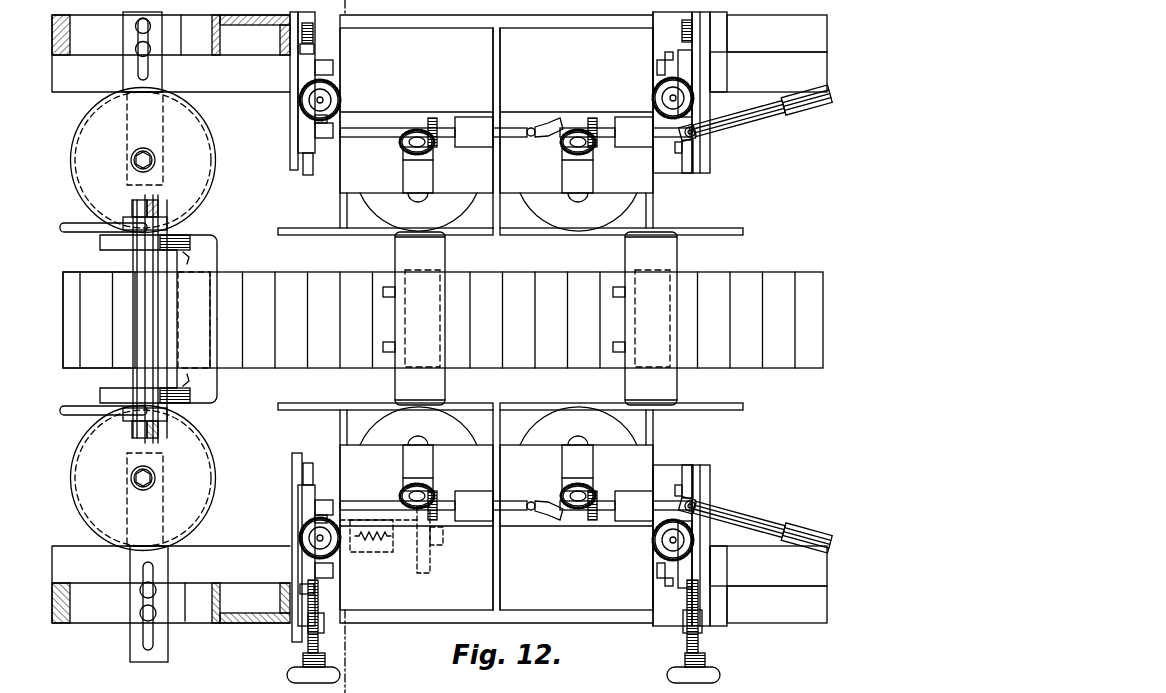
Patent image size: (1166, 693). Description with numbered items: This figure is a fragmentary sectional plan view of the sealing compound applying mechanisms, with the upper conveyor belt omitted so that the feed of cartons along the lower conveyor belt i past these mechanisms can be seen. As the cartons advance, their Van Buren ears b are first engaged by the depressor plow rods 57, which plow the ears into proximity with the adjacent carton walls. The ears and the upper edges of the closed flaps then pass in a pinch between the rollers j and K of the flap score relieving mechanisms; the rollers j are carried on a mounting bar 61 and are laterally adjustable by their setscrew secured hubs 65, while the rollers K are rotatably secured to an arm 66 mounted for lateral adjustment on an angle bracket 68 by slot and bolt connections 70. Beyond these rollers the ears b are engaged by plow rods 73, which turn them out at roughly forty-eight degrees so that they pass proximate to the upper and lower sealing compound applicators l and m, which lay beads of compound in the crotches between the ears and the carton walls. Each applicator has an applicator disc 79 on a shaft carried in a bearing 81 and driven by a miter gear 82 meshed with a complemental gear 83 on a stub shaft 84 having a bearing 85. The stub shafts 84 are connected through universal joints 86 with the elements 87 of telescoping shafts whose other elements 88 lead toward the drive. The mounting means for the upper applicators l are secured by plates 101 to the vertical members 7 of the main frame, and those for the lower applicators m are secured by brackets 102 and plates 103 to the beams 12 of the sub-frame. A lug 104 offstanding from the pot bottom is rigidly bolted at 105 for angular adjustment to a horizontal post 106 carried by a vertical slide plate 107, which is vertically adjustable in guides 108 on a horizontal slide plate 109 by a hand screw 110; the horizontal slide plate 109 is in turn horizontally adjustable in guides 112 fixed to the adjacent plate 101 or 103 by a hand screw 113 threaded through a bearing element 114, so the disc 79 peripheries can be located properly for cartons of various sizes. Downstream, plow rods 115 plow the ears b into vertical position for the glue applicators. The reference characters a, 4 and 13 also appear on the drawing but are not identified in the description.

The frame bar 4 is at (778, 57).
The vertical members 7 is at (224, 57).
The sub-frame beams 12 is at (802, 55).
The pusher unit 13 is at (347, 41).
The depressor plow rods 57 is at (68, 232).
The mounting bar 61 is at (133, 318).
The setscrew secured hubs 65 is at (160, 216).
The upper arm 66 is at (162, 78).
The upper angle bracket 68 is at (178, 40).
The slot and bolt connections 70 is at (135, 49).
The upper plow rods 73 is at (330, 226).
The applicator disc 79 is at (384, 202).
The bearing 81 is at (433, 173).
The driven miter gear 82 is at (410, 136).
The complemental gear 83 is at (432, 118).
The stub shaft 84 is at (512, 128).
The bearing 85 is at (475, 120).
The universal joints 86 is at (529, 140).
The telescoping shaft element 87 is at (756, 131).
The telescoping shaft element 88 is at (794, 113).
The plates 101 is at (292, 152).
The brackets 102 is at (722, 30).
The plates 103 is at (706, 158).
The lug 104 is at (418, 565).
The bolt 105 is at (433, 553).
The horizontal post 106 is at (371, 551).
The vertical slide plate 107 is at (328, 125).
The guides 108 is at (334, 75).
The horizontal slide plate 109 is at (302, 50).
The hand screw 110 is at (318, 105).
The guides 112 is at (305, 128).
The hand screw 113 is at (300, 33).
The bearing element 114 is at (324, 628).
The plow rods 115 is at (724, 224).
The rollers K is at (208, 157).
The guide member a is at (424, 319).
The Van Buren ears b is at (205, 228).
The conveyor belt i is at (315, 270).
The rollers j is at (189, 320).
The upper sealing compound applicators l is at (418, 632).
The lower sealing compound applicators m is at (571, 629).